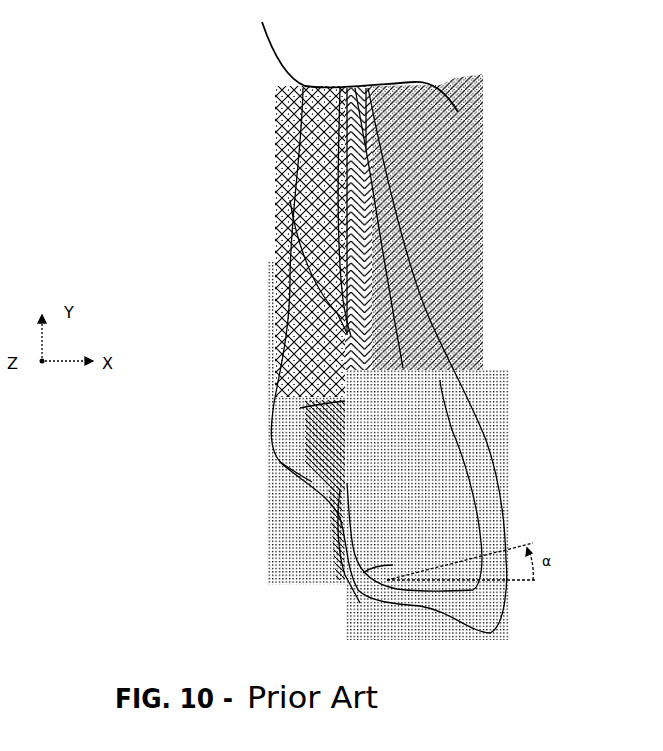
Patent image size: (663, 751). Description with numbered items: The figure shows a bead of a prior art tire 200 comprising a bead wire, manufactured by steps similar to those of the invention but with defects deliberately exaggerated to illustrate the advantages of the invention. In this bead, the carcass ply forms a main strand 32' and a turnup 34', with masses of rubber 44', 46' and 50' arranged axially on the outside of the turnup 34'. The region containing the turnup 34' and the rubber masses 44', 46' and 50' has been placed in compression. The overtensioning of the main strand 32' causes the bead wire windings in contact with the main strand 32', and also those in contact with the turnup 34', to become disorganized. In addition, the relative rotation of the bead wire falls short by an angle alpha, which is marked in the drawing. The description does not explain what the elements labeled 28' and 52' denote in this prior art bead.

The tire 200 is at (138, 197).
The mass of rubber 46' is at (265, 241).
The tooth 28' is at (439, 222).
The main strand 32' is at (456, 228).
The turnup 34' is at (265, 398).
The mass of rubber 44' is at (265, 490).
The mass of rubber 50' is at (258, 479).
The archwire slot 52' is at (320, 594).